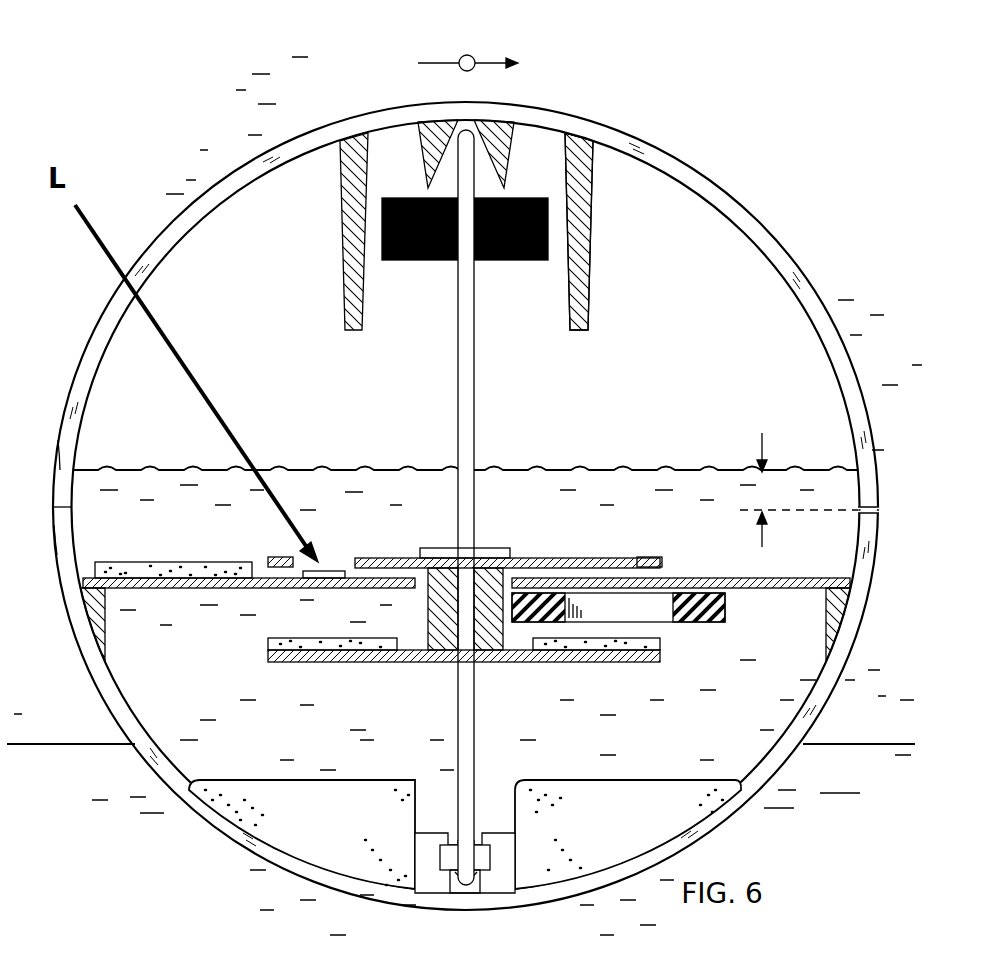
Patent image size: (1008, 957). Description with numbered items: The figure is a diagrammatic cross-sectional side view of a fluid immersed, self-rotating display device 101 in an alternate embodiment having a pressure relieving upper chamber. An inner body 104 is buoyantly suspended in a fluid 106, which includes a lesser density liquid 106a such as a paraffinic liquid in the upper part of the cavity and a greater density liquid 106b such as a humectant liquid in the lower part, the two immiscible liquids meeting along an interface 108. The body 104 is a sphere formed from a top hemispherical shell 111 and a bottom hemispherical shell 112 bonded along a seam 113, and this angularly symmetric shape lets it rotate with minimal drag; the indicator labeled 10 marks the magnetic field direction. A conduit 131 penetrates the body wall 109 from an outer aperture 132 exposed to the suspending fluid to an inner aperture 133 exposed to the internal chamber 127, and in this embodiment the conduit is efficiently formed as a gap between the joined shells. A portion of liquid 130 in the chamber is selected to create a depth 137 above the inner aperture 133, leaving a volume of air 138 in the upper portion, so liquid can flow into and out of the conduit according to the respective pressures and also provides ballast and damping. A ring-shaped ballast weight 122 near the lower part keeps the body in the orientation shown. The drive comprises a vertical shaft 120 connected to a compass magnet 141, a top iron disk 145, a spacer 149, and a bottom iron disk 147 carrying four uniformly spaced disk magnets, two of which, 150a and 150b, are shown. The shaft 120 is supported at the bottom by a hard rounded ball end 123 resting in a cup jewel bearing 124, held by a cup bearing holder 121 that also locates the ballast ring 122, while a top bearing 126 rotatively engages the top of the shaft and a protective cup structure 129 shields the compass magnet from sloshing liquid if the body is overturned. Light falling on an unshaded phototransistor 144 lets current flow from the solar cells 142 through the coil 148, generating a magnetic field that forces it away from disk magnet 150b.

The magnetic field direction indicator 10 is at (474, 56).
The self-rotating display device 101 is at (866, 232).
The inner body 104 is at (692, 165).
The fluid 106 is at (340, 110).
The lesser density liquid 106a is at (100, 730).
The greater density liquid 106b is at (66, 780).
The interface 108 is at (36, 748).
The body wall 109 is at (870, 428).
The top hemispherical shell 111 is at (60, 450).
The bottom hemispherical shell 112 is at (56, 532).
The seam 113 is at (58, 505).
The vertical shaft 120 is at (458, 435).
The cup bearing holder 121 is at (500, 885).
The ballast weight 122 is at (308, 830).
The ball end 123 is at (455, 897).
The cup jewel bearing 124 is at (470, 895).
The top bearing 126 is at (508, 126).
The internal chamber 127 is at (650, 374).
The protective cup structure 129 is at (600, 270).
The liquid 130 is at (651, 527).
The conduit 131 is at (870, 500).
The outer aperture 132 is at (890, 512).
The inner aperture 133 is at (848, 514).
The depth 137 is at (760, 446).
The air 138 is at (268, 372).
The compass magnet 141 is at (438, 258).
The solar cells 142 is at (180, 562).
The phototransistor 144 is at (332, 571).
The top iron disk 145 is at (570, 558).
The bottom iron disk 147 is at (592, 663).
The coil 148 is at (725, 608).
The spacer 149 is at (430, 626).
The disk magnet 150a is at (268, 645).
The disk magnet 150b is at (662, 646).